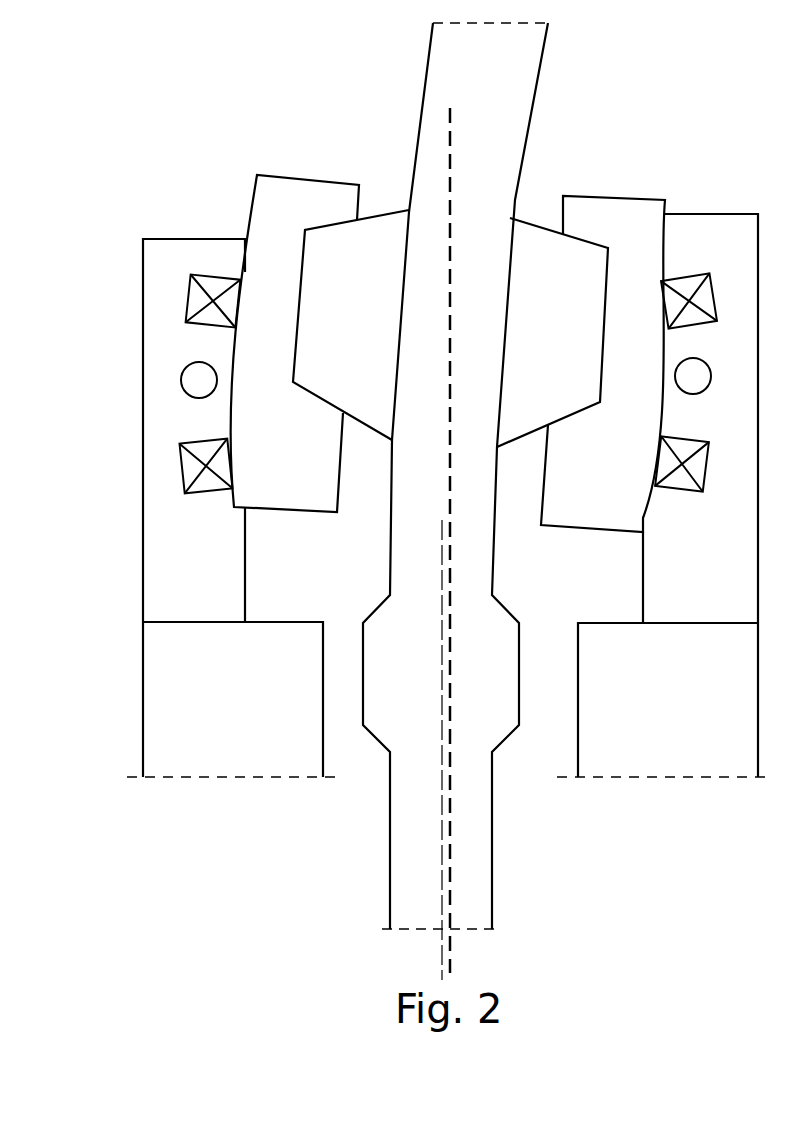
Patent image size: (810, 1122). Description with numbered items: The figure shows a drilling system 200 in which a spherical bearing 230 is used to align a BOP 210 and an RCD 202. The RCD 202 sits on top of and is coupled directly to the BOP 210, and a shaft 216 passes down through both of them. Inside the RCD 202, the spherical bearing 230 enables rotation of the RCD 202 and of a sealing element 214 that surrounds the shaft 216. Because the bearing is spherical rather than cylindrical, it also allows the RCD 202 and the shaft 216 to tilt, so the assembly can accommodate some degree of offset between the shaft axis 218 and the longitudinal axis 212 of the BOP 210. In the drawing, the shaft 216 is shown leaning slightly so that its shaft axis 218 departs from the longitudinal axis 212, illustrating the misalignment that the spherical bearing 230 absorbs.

The drilling system 200 is at (622, 82).
The RCD 202 is at (684, 187).
The BOP 210 is at (143, 737).
The longitudinal axis 212 is at (450, 873).
The sealing element 214 is at (377, 213).
The shaft 216 is at (390, 862).
The shaft axis 218 is at (442, 552).
The spherical bearing 230 is at (215, 272).